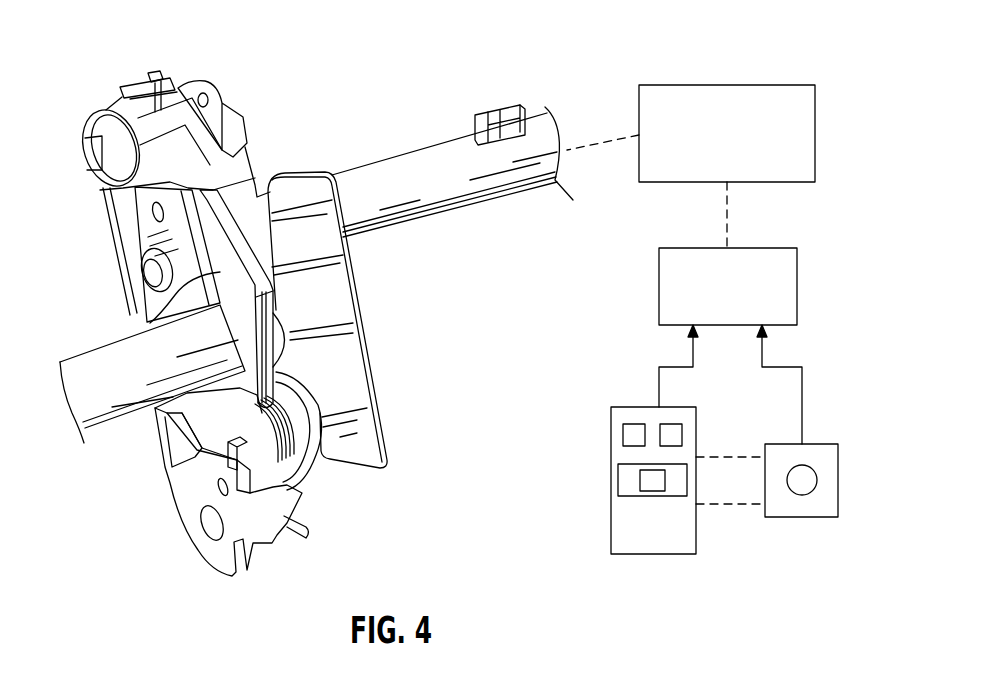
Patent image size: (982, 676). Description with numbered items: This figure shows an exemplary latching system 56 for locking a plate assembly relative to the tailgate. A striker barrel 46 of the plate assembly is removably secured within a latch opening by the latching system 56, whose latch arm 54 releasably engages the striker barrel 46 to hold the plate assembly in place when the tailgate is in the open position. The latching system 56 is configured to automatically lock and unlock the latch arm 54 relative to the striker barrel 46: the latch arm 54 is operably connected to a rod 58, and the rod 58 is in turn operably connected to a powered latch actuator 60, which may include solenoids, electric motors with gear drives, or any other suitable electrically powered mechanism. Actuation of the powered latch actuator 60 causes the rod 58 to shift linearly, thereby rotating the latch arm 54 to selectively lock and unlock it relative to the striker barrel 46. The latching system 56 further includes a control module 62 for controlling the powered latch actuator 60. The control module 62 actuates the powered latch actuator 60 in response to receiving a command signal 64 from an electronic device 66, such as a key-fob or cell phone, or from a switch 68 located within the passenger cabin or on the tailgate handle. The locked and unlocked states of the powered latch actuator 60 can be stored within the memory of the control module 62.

The striker barrel 46 is at (73, 362).
The latch arm 54 is at (138, 324).
The latching system 56 is at (418, 108).
The rod 58 is at (392, 178).
The powered latch actuator 60 is at (816, 132).
The control module 62 is at (798, 280).
The command signal 64 is at (659, 387).
The electronic device 66 is at (611, 482).
The switch 68 is at (802, 497).